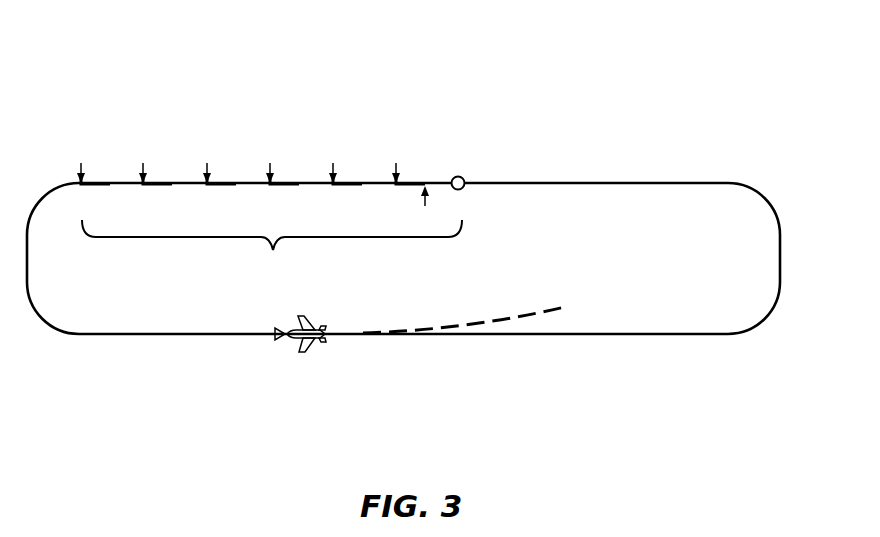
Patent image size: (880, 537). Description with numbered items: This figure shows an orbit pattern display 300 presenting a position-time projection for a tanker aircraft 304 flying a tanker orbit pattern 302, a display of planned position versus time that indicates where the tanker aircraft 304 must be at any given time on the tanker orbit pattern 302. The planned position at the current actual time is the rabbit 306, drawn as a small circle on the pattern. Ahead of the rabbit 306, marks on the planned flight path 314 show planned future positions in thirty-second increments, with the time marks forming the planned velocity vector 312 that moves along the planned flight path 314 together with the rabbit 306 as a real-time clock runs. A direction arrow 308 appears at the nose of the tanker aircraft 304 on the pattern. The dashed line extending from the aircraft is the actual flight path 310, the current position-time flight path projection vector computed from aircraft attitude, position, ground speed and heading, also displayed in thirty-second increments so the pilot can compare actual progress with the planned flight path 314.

The holding pattern display 300 is at (696, 34).
The tanker orbit pattern 302 is at (681, 182).
The tanker aircraft 304 is at (312, 328).
The rabbit 306 is at (455, 176).
The direction arrow 308 is at (287, 345).
The actual flight path 310 is at (551, 300).
The planned velocity vector 312 is at (236, 182).
The planned flight path 314 is at (272, 250).